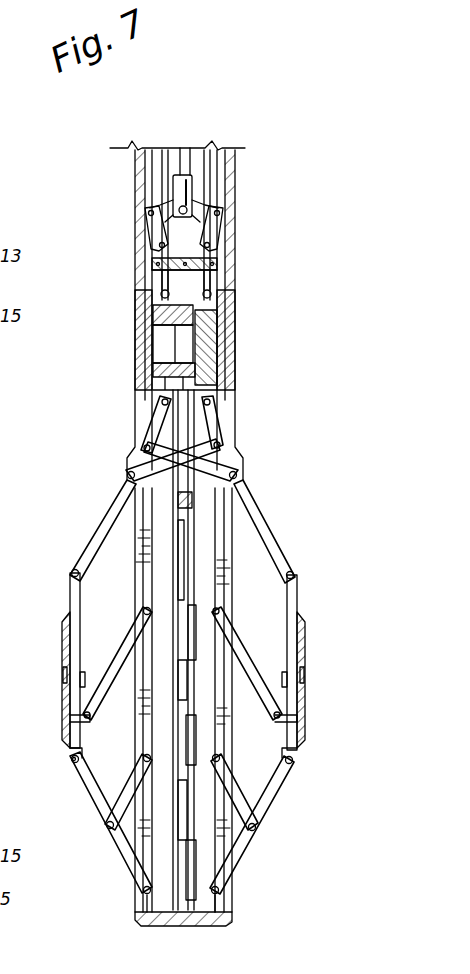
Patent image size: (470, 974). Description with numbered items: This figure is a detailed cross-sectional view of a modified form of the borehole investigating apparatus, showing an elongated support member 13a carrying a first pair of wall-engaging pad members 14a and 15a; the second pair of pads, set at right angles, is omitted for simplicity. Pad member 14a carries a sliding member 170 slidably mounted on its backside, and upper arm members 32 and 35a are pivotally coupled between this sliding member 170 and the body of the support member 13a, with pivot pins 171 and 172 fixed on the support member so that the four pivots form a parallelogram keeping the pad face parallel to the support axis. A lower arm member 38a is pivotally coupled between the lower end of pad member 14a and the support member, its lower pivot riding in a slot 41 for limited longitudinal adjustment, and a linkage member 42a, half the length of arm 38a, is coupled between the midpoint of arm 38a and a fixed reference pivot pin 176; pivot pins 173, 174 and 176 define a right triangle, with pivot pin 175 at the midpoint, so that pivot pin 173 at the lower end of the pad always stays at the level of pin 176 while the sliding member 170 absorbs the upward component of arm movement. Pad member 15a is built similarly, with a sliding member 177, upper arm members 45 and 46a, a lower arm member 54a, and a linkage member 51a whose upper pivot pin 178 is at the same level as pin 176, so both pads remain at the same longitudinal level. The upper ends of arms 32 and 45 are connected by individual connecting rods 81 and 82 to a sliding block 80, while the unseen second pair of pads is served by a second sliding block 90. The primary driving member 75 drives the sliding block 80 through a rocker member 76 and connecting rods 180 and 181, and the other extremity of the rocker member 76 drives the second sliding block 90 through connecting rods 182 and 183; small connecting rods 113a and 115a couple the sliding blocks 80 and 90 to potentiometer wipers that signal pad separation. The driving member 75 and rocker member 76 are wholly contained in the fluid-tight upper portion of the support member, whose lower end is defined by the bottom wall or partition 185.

The elongated support member 13a is at (133, 353).
The primary driving member 75 is at (185, 148).
The rocker member 76 is at (192, 222).
The connecting rod 182 is at (146, 222).
The connecting rod 180 is at (223, 222).
The connecting rod 115a is at (140, 170).
The connecting rod 113a is at (230, 172).
The bottom wall or partition 185 is at (235, 248).
The connecting rod 183 is at (136, 283).
The connecting rod 181 is at (235, 286).
The second sliding block 90 is at (153, 312).
The sliding block 80 is at (207, 340).
The connecting rod 82 is at (145, 428).
The connecting rod 81 is at (215, 438).
The pivot pin 171 is at (128, 475).
The arm member 32 is at (105, 505).
The upper arm member 45 is at (255, 508).
The sliding member 170 is at (70, 597).
The wall-engaging pad member 14a is at (62, 680).
The sliding member 177 is at (297, 596).
The pad member 15a is at (305, 700).
The arm member 35a is at (128, 630).
The pivot pin 172 is at (143, 610).
The upper arm member 46a is at (252, 640).
The lower arm member 38a is at (90, 787).
The pivot pin 173 is at (68, 758).
The linkage member 42a is at (128, 785).
The pivot pin 176 is at (145, 754).
The pivot pin 175 is at (106, 826).
The pivot pin 174 is at (143, 890).
The lower arm member 54a is at (272, 800).
The linkage member 51a is at (250, 796).
The pivot pin 178 is at (222, 760).
The slot 41 is at (140, 905).